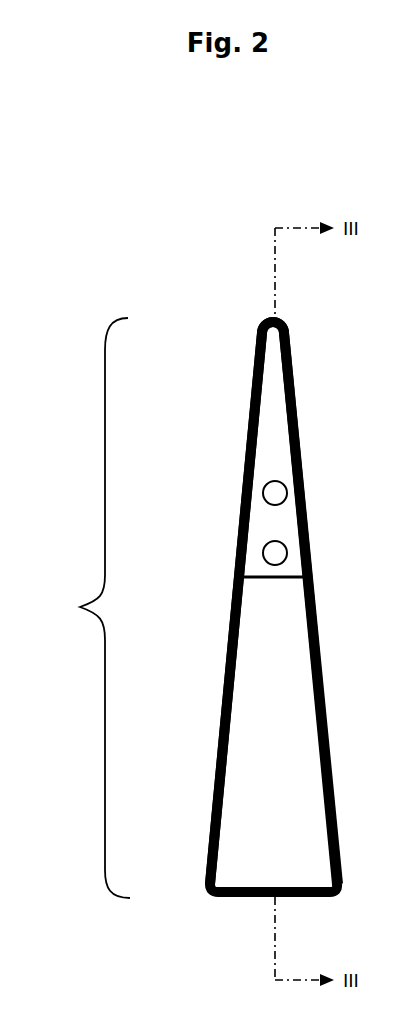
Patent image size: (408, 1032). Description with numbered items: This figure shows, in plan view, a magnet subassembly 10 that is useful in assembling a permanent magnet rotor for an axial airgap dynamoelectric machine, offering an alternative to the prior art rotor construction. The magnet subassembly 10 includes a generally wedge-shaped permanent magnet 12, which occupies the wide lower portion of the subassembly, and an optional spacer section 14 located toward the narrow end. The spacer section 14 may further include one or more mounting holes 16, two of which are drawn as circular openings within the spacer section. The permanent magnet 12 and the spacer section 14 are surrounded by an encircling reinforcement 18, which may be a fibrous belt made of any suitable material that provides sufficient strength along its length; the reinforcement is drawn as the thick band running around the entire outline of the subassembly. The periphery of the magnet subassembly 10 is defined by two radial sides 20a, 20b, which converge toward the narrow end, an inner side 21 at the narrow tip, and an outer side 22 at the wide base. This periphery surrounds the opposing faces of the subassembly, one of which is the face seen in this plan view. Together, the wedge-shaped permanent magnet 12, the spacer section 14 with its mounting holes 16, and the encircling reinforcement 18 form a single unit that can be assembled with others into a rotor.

The magnet subassembly 10 is at (77, 608).
The permanent magnet 12 is at (291, 815).
The spacer section 14 is at (277, 438).
The mounting holes 16 is at (263, 492).
The encircling reinforcement 18 is at (222, 670).
The radial side 20a is at (216, 748).
The radial side 20b is at (309, 506).
The inner side 21 is at (268, 313).
The outer side 22 is at (258, 899).